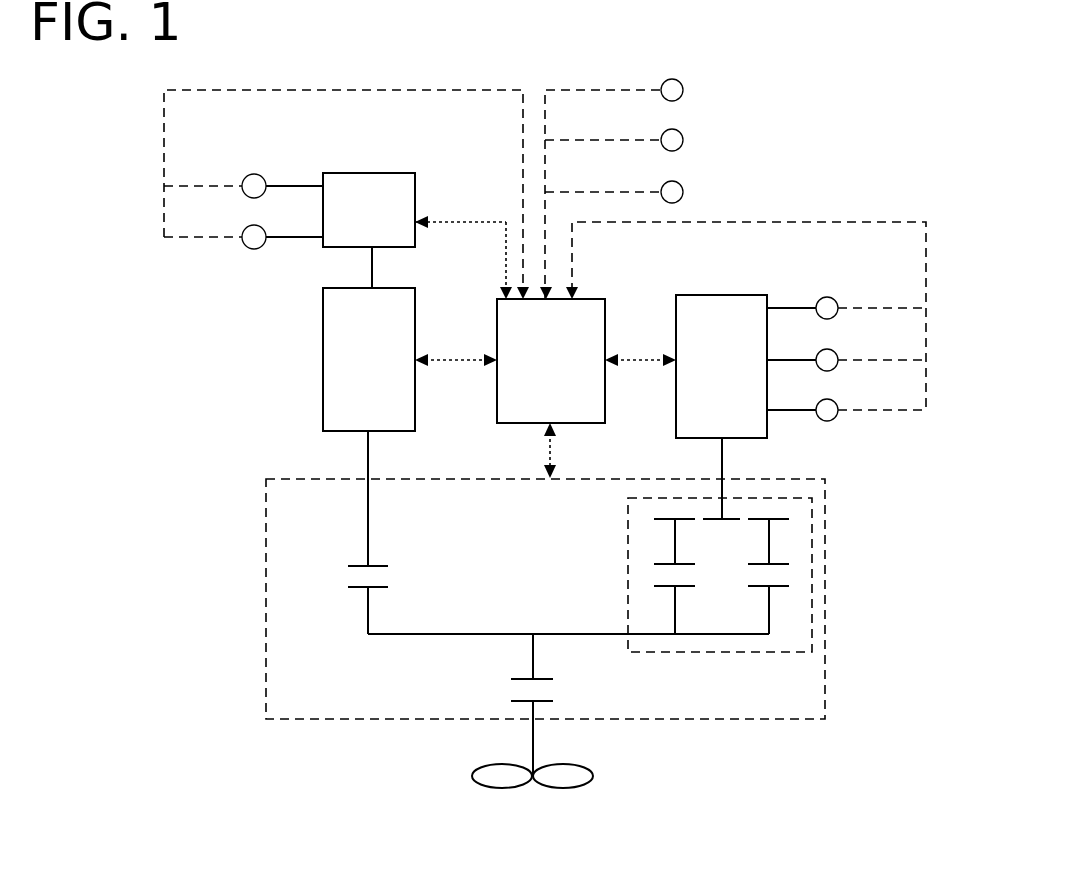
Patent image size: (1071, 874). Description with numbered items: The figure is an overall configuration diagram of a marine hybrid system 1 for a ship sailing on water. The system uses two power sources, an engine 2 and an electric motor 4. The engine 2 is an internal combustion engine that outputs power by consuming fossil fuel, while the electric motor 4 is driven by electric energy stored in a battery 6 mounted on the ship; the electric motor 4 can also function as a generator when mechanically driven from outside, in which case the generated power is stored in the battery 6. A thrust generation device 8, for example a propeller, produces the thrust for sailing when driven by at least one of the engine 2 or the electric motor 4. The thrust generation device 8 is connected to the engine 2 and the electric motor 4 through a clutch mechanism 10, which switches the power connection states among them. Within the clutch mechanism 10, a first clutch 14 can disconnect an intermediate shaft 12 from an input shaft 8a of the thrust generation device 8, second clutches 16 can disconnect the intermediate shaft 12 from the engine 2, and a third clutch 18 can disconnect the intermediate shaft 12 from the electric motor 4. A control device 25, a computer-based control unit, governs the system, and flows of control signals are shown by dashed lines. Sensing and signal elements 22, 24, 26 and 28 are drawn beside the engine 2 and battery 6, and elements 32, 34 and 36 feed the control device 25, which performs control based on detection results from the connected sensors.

The marine hybrid system 1 is at (890, 102).
The engine 2 is at (752, 295).
The electric motor 4 is at (395, 288).
The battery 6 is at (392, 173).
The thrust generation device 8 is at (585, 789).
The input shaft 8a is at (535, 742).
The clutch mechanism 10 is at (762, 478).
The intermediate shaft 12 is at (465, 633).
The first clutch 14 is at (563, 688).
The second clutches 16 is at (814, 592).
The third clutch 18 is at (384, 559).
The engine speed sensor 22 is at (836, 300).
The engine temperature sensor 24 is at (836, 352).
The control device 25 is at (583, 299).
The power sensor 26 is at (245, 180).
The battery state sensor 28 is at (245, 231).
The operation input device 32 is at (681, 82).
The mode selector 34 is at (681, 132).
The ship speed sensor 36 is at (681, 184).